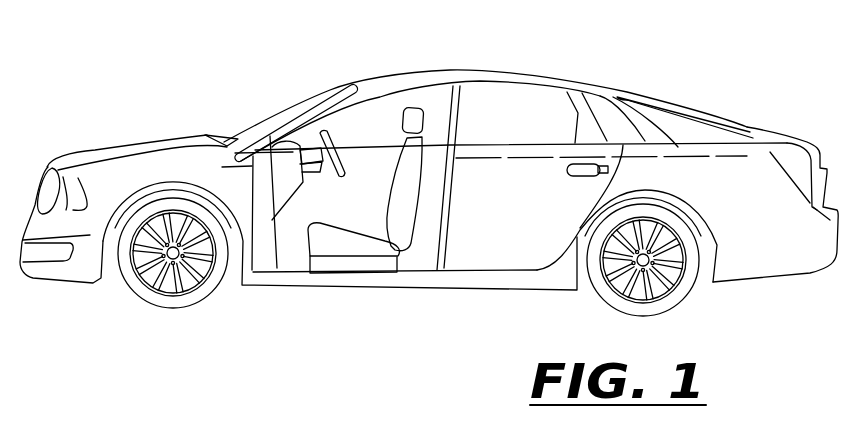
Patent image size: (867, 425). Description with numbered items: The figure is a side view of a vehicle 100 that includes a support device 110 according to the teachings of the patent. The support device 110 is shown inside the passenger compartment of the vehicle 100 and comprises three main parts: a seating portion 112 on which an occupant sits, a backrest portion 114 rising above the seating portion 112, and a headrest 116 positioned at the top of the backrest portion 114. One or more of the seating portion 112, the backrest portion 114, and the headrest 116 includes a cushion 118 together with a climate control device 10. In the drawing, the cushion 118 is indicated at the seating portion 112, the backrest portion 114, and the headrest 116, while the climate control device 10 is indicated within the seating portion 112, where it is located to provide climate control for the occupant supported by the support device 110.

The vehicle 100 is at (273, 52).
The support device 110 is at (395, 105).
The seating portion 112 is at (327, 243).
The backrest portion 114 is at (403, 207).
The headrest 116 is at (413, 117).
The cushion 118 is at (403, 127).
The climate control device 10 is at (362, 252).